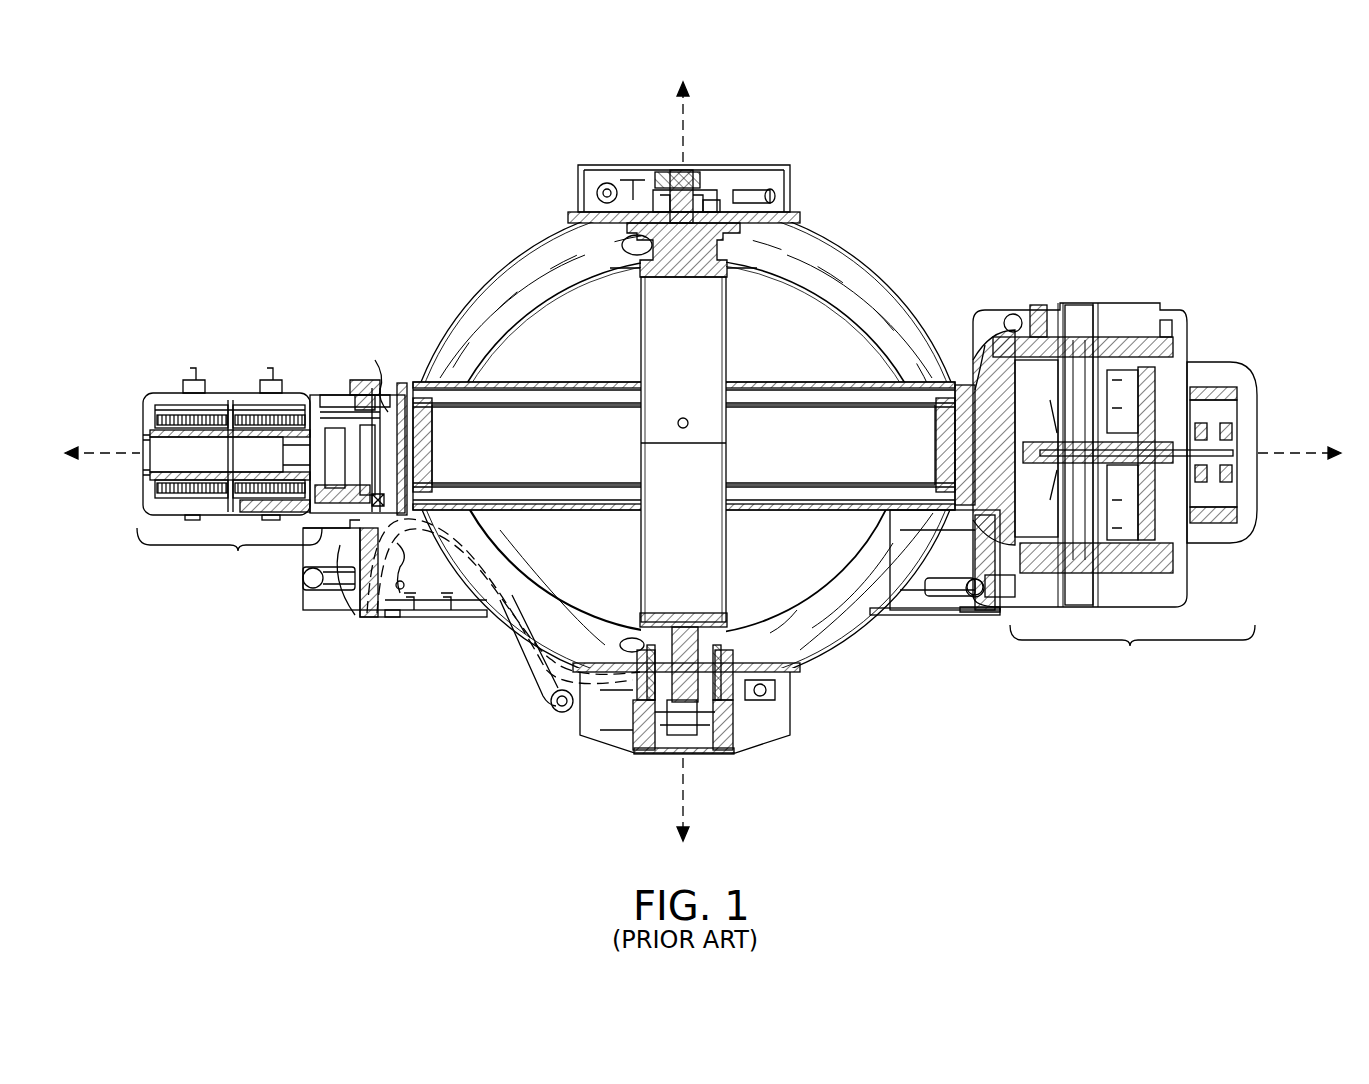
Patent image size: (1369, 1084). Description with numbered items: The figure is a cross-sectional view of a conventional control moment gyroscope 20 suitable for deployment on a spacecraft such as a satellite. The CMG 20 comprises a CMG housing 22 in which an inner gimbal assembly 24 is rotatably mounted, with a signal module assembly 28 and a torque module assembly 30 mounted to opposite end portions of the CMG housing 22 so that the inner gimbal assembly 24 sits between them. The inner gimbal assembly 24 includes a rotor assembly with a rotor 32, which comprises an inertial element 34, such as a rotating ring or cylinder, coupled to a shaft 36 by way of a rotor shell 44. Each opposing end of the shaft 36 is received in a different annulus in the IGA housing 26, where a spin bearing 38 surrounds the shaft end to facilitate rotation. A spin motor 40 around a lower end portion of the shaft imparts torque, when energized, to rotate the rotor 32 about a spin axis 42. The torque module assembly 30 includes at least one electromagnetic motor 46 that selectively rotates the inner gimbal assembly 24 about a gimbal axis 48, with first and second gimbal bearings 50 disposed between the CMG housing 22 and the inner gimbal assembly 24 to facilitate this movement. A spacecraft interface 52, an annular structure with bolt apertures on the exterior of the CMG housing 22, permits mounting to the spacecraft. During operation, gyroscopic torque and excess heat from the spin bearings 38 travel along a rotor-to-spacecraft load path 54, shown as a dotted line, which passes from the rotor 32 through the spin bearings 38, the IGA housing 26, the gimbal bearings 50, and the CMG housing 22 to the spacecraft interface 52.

The control moment gyroscope 20 is at (1017, 181).
The CMG housing 22 is at (355, 610).
The inner gimbal assembly 24 is at (832, 236).
The IGA housing 26 is at (540, 262).
The signal module assembly 28 is at (272, 480).
The torque module assembly 30 is at (1108, 496).
The rotor 32 is at (684, 446).
The inertial element 34 is at (434, 425).
The shaft 36 is at (682, 278).
The spin bearing 38 is at (710, 180).
The spin motor 40 is at (715, 745).
The spin axis 42 is at (683, 124).
The rotor shell 44 is at (535, 590).
The electromagnetic motor 46 is at (1112, 335).
The gimbal axis 48 is at (98, 450).
The gimbal bearings 50 is at (372, 384).
The spacecraft interface 52 is at (395, 622).
The rotor-to-spacecraft load path 54 is at (515, 618).